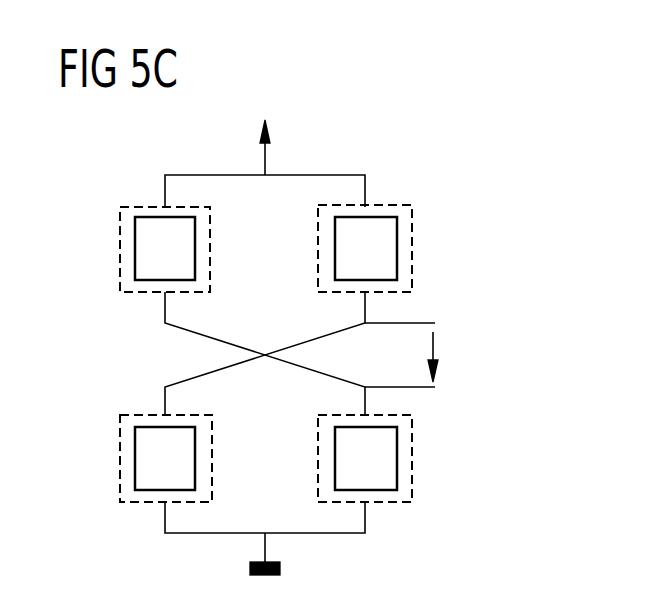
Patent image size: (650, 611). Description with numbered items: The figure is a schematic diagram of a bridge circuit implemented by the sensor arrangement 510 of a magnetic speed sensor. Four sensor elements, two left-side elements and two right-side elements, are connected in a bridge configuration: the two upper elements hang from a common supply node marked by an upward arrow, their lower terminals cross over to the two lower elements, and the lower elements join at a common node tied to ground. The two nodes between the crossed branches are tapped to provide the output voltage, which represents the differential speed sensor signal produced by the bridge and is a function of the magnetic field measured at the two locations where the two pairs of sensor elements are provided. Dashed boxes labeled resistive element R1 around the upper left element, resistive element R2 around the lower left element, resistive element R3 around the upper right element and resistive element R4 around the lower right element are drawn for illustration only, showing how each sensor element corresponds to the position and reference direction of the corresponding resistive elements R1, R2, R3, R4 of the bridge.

The sensor arrangement 510 is at (349, 142).
The resistive element R1 is at (120, 243).
The resistive element R2 is at (120, 455).
The resistive element R3 is at (412, 240).
The resistive element R4 is at (412, 450).